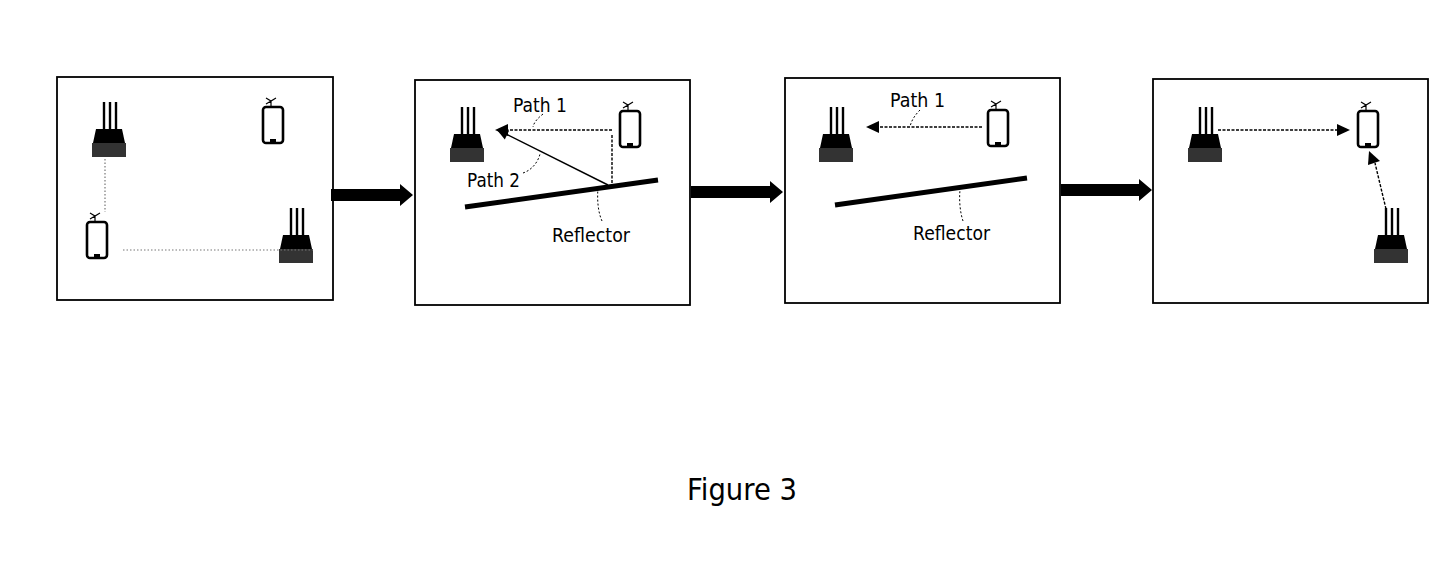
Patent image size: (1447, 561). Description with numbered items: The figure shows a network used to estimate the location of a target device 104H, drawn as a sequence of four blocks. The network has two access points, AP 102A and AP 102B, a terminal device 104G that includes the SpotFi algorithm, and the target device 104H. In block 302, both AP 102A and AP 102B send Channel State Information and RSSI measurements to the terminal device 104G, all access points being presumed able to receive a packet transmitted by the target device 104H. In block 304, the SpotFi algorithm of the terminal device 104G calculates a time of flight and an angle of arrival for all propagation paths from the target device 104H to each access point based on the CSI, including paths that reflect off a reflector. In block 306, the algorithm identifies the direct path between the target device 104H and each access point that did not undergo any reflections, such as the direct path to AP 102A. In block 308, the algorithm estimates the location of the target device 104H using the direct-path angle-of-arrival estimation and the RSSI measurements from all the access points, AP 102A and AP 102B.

The block 302 is at (174, 77).
The block 304 is at (487, 80).
The block 306 is at (877, 78).
The block 308 is at (1217, 79).
The AP 102A is at (121, 127).
The AP 102B is at (290, 212).
The terminal device 104G is at (90, 254).
The target device 104H is at (262, 93).